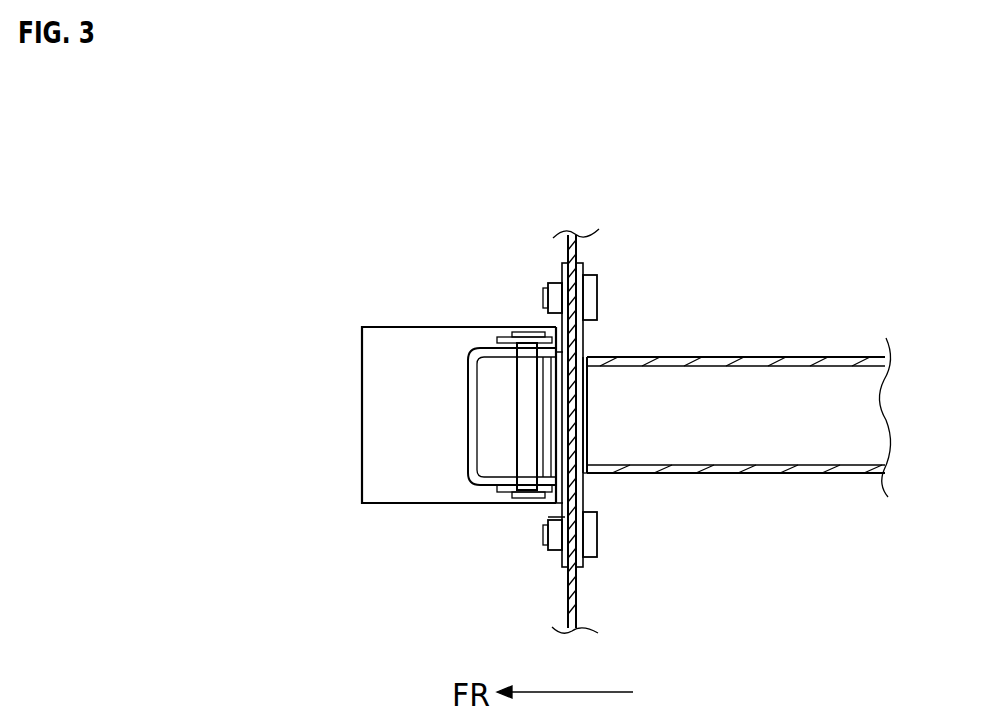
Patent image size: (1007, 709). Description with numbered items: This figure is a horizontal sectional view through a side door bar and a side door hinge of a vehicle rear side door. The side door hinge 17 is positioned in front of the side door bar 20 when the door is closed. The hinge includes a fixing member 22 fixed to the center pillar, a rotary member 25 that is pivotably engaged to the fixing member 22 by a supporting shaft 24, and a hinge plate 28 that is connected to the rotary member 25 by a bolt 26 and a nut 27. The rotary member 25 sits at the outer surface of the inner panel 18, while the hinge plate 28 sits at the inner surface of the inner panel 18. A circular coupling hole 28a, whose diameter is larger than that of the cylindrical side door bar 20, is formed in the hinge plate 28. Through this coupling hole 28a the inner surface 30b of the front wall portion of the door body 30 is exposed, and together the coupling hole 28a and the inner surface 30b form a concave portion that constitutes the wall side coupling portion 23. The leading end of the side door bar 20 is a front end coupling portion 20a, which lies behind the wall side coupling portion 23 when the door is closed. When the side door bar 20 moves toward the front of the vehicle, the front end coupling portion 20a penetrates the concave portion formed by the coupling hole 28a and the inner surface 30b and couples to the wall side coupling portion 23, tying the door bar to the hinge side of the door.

The side door hinge 17 is at (419, 327).
The inner panel 18 is at (568, 600).
The side door bar 20 is at (813, 357).
The front end coupling portion 20a is at (588, 445).
The fixing member 22 is at (362, 392).
The wall side coupling portion 23 is at (587, 478).
The supporting shaft 24 is at (517, 445).
The rotary member 25 is at (468, 393).
The bolt 26 is at (597, 292).
The nut 27 is at (547, 283).
The hinge plate 28 is at (587, 567).
The coupling hole 28a is at (590, 372).
The door body 30 is at (578, 605).
The inner surface 30b is at (588, 410).